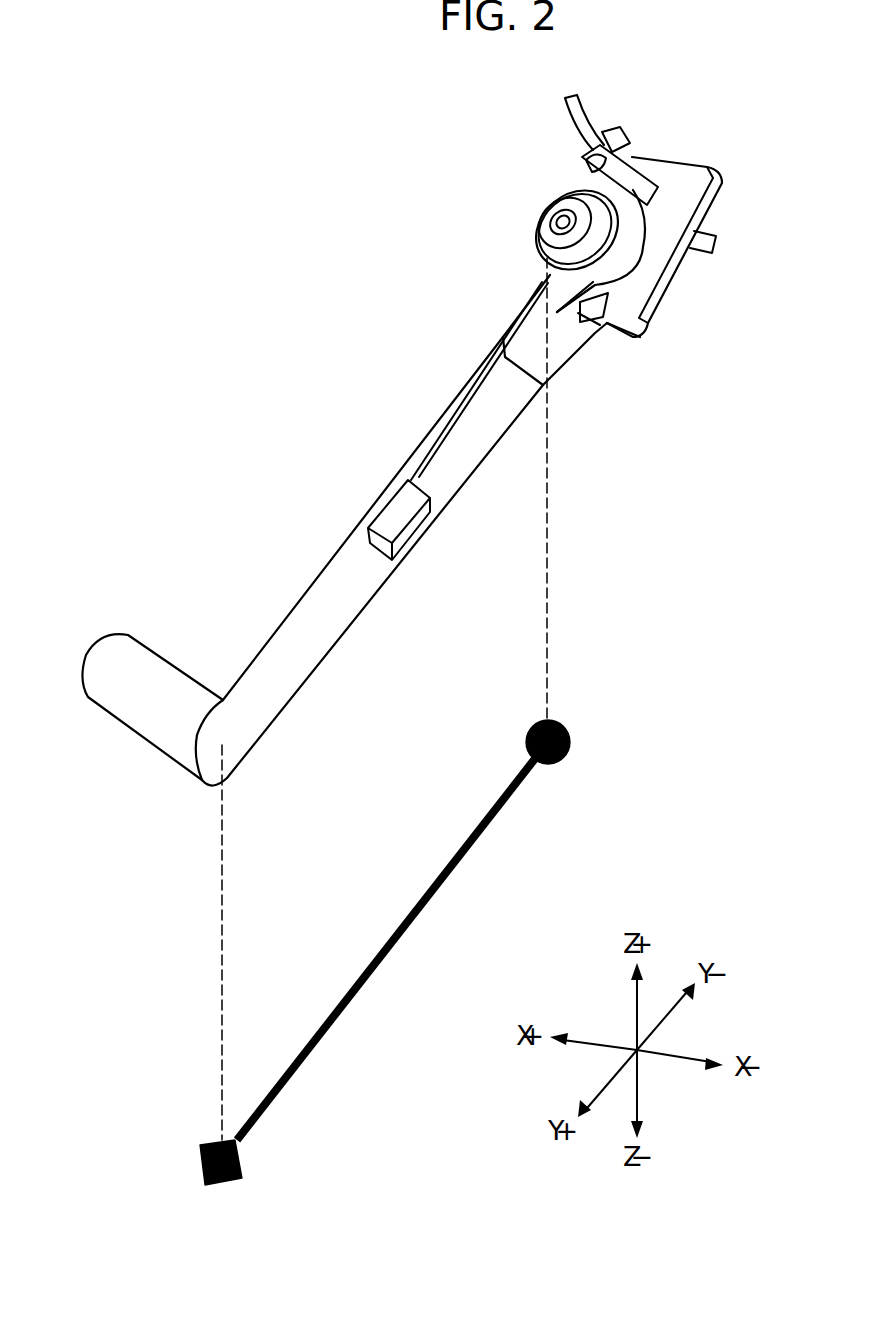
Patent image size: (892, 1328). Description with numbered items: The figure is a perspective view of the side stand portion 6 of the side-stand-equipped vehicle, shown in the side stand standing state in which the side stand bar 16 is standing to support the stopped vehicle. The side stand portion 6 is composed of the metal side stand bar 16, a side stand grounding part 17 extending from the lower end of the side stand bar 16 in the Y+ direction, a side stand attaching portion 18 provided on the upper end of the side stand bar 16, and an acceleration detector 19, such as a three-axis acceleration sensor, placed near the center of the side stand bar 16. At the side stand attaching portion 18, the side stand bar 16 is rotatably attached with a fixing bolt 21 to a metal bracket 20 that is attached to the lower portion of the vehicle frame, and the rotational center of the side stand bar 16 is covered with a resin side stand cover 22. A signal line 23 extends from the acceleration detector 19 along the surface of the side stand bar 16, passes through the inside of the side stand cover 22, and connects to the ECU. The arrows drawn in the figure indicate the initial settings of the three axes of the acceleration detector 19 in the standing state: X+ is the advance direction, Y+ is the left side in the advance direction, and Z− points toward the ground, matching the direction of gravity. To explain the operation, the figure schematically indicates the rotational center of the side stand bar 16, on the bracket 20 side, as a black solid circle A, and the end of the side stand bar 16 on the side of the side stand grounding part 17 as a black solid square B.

The side stand portion 6 is at (373, 252).
The side stand bar 16 is at (320, 608).
The side stand grounding part 17 is at (170, 727).
The side stand attaching portion 18 is at (665, 297).
The acceleration detector 19 is at (392, 517).
The bracket 20 is at (677, 178).
The fixing bolt 21 is at (557, 217).
The side stand cover 22 is at (623, 192).
The signal line 23 is at (458, 427).
The rotational center of the side stand bar A is at (568, 730).
The end of the side stand bar B is at (243, 1180).